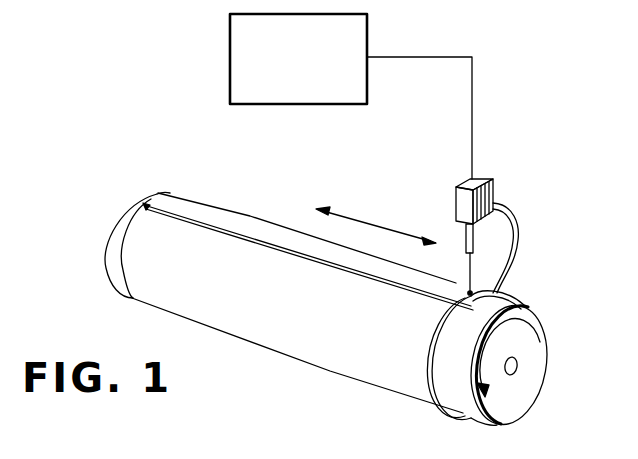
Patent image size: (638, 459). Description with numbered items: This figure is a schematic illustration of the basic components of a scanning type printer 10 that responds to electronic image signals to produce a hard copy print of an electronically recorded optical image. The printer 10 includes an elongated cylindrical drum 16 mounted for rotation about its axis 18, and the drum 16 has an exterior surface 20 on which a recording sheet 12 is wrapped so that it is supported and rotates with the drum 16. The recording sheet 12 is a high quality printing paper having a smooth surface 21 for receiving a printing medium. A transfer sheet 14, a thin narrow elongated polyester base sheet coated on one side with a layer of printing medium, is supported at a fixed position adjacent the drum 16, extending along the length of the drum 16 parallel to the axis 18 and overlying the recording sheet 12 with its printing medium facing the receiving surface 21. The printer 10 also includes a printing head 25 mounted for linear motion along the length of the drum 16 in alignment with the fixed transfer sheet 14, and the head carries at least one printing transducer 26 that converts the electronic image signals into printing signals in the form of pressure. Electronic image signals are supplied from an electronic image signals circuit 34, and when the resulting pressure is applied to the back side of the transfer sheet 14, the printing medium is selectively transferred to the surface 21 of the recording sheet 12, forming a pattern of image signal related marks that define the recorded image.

The scanning type printer 10 is at (207, 110).
The recording sheet 12 is at (431, 394).
The transfer sheet 14 is at (213, 212).
The cylindrical drum 16 is at (547, 306).
The axis 18 is at (518, 366).
The exterior surface 20 is at (122, 220).
The smooth surface 21 is at (309, 326).
The printing head 25 is at (502, 180).
The printing transducer 26 is at (466, 255).
The electronic image signals circuit 34 is at (368, 40).